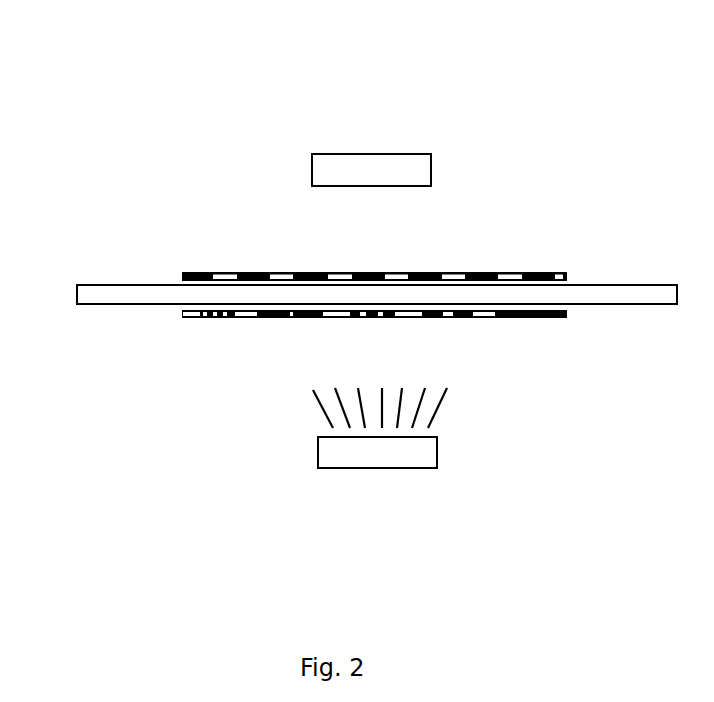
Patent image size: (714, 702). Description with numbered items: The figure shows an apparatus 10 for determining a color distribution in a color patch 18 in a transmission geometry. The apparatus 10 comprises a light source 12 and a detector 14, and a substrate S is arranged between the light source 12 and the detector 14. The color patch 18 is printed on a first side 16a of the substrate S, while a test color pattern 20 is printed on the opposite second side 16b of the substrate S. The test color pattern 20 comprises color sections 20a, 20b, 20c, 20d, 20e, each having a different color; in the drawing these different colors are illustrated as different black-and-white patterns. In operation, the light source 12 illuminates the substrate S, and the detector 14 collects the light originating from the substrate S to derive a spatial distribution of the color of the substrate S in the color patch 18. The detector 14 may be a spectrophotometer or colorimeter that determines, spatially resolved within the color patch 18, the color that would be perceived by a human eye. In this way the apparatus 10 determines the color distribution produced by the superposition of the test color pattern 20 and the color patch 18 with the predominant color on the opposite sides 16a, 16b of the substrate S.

The apparatus 10 is at (185, 103).
The light source 12 is at (318, 468).
The detector 14 is at (357, 154).
The substrate S is at (77, 295).
The first side 16a is at (113, 285).
The second side 16b is at (112, 305).
The color patch 18 is at (202, 272).
The test color pattern 20 is at (182, 313).
The color section 20a is at (214, 346).
The color section 20b is at (286, 343).
The color section 20c is at (404, 349).
The color section 20d is at (471, 345).
The color section 20e is at (532, 347).